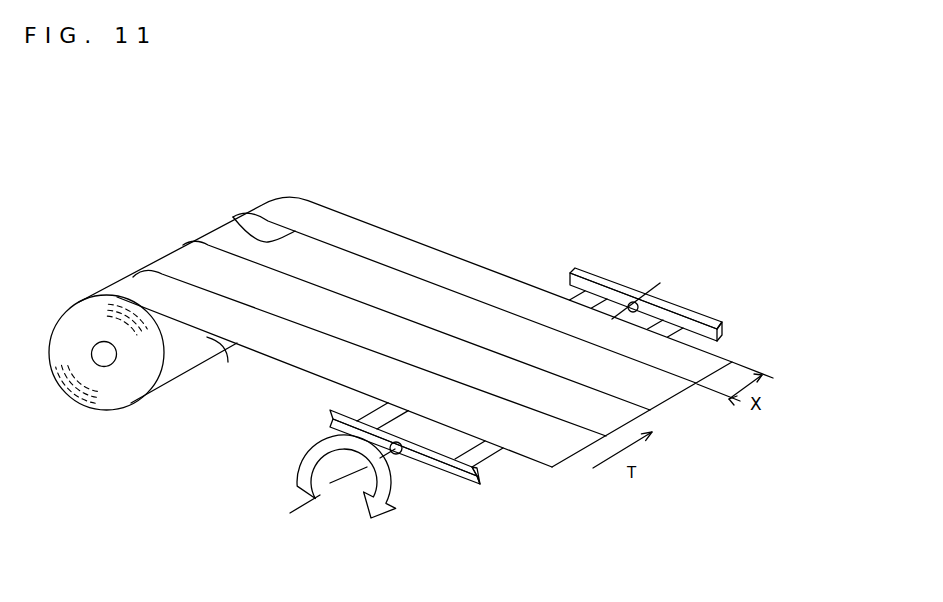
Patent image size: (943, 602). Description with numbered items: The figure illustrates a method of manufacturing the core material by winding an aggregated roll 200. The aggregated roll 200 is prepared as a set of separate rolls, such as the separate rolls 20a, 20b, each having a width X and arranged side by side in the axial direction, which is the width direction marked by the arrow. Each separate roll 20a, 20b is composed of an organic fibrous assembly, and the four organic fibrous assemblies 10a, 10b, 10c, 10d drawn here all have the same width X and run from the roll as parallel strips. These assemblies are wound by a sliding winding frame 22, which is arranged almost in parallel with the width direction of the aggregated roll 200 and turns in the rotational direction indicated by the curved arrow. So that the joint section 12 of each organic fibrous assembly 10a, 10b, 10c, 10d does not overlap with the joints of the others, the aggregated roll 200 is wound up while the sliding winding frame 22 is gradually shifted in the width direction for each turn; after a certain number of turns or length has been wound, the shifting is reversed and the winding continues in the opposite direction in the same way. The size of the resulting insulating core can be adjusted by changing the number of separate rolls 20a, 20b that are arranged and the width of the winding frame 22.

The organic fibrous assembly 10a is at (448, 398).
The organic fibrous assembly 10b is at (400, 337).
The organic fibrous assembly 10c is at (378, 293).
The organic fibrous assembly 10d is at (360, 230).
The joint section 12 is at (237, 216).
The separate roll 20a is at (173, 367).
The separate roll 20b is at (224, 362).
The sliding winding frame 22 is at (432, 468).
The aggregated roll 200 is at (93, 418).